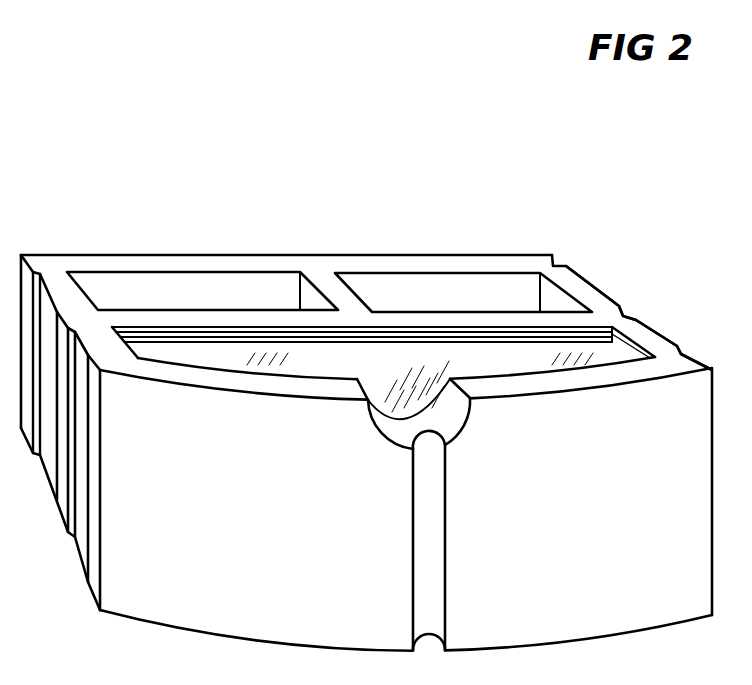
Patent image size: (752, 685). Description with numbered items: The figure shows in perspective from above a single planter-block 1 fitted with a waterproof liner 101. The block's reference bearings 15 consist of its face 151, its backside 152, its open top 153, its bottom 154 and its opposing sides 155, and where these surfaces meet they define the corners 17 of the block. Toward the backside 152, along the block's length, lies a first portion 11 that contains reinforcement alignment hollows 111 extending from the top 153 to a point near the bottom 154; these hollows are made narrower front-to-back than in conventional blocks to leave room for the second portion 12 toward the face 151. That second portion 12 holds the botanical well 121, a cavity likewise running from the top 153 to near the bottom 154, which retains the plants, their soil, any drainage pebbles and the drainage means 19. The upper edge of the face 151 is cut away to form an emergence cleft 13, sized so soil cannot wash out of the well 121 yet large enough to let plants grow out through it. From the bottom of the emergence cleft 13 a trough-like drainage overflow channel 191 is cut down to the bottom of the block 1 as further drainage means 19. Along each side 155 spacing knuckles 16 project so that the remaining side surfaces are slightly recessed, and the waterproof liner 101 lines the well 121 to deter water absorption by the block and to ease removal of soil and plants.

The planter-block 1 is at (623, 112).
The reference bearings 15 is at (252, 157).
The opposing sides 155 is at (48, 308).
The backside 152 is at (178, 268).
The open top 153 is at (245, 300).
The bottom 154 is at (313, 457).
The face 151 is at (277, 327).
The emergence cleft 13 is at (367, 327).
The drainage means 19 is at (405, 427).
The waterproof liner 101 is at (358, 640).
The drainage overflow channel 191 is at (423, 452).
The first portion 11 is at (449, 264).
The reinforcement alignment hollows 111 is at (464, 300).
The second portion 12 is at (517, 300).
The botanical well 121 is at (550, 345).
The spacing knuckles 16 is at (685, 363).
The corners 17 is at (705, 363).